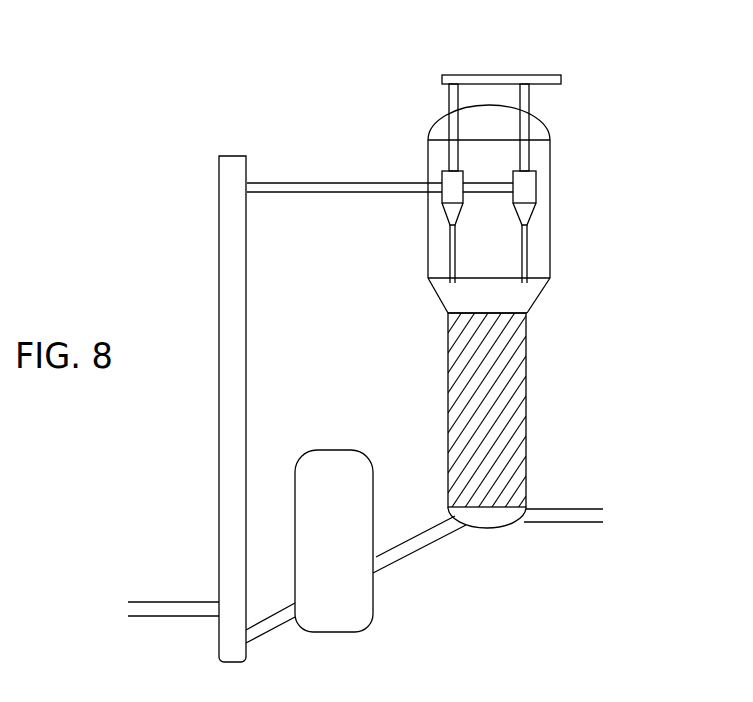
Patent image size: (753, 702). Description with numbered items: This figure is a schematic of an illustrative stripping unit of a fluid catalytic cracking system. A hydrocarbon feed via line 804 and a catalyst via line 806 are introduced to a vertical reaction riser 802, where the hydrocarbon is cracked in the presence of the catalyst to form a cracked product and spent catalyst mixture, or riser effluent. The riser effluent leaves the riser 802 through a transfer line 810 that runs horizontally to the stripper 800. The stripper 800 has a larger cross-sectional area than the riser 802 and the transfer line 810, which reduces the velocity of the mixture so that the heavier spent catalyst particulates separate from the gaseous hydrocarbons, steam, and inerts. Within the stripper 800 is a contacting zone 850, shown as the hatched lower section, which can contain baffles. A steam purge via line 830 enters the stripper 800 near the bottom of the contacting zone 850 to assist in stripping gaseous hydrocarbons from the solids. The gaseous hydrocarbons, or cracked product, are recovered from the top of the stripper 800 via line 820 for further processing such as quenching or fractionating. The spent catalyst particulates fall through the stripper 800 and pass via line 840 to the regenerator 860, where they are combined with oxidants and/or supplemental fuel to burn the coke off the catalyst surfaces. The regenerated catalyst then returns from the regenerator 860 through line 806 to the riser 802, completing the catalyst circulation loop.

The catalyst stripper 800 is at (536, 293).
The reaction riser 802 is at (219, 217).
The feed line 804 is at (168, 600).
The catalyst line 806 is at (265, 636).
The transfer line 810 is at (386, 181).
The cracked product line 820 is at (504, 74).
The steam purge line 830 is at (585, 508).
The spent catalyst line 840 is at (415, 533).
The contacting zone 850 is at (458, 392).
The regenerator 860 is at (353, 541).